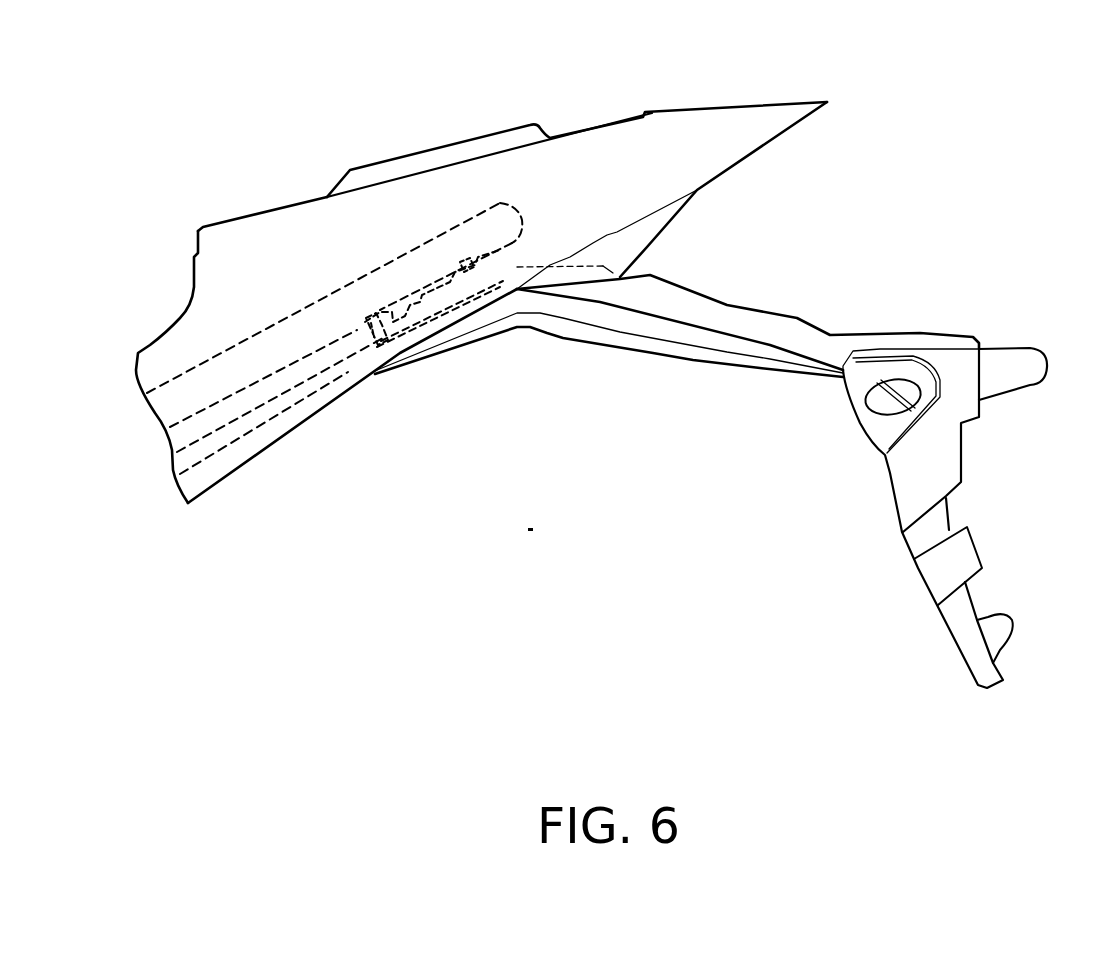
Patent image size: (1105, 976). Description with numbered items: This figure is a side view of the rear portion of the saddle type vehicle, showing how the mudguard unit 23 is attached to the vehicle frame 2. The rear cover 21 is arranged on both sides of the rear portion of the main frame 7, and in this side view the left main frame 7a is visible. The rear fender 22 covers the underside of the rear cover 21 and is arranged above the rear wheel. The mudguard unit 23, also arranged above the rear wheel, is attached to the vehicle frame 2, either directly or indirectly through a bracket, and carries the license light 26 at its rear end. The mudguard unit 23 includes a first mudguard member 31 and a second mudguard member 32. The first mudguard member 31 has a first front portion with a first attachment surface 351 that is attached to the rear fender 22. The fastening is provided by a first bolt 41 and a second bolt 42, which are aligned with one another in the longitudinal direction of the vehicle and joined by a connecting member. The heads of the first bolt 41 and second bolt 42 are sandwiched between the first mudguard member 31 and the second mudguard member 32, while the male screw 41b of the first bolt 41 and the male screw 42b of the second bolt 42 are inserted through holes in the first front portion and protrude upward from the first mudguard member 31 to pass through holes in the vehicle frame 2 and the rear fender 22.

The vehicle frame 2 is at (220, 338).
The main frame 7 is at (272, 328).
The left main frame 7a is at (315, 333).
The rear cover 21 is at (598, 158).
The rear fender 22 is at (260, 457).
The mudguard unit 23 is at (795, 316).
The license light 26 is at (1003, 363).
The first mudguard member 31 is at (697, 307).
The second mudguard member 32 is at (474, 308).
The first bolt 41 is at (363, 340).
The male screw 41b is at (370, 320).
The second bolt 42 is at (489, 263).
The male screw 42b is at (463, 258).
The first attachment surface 351 is at (437, 306).